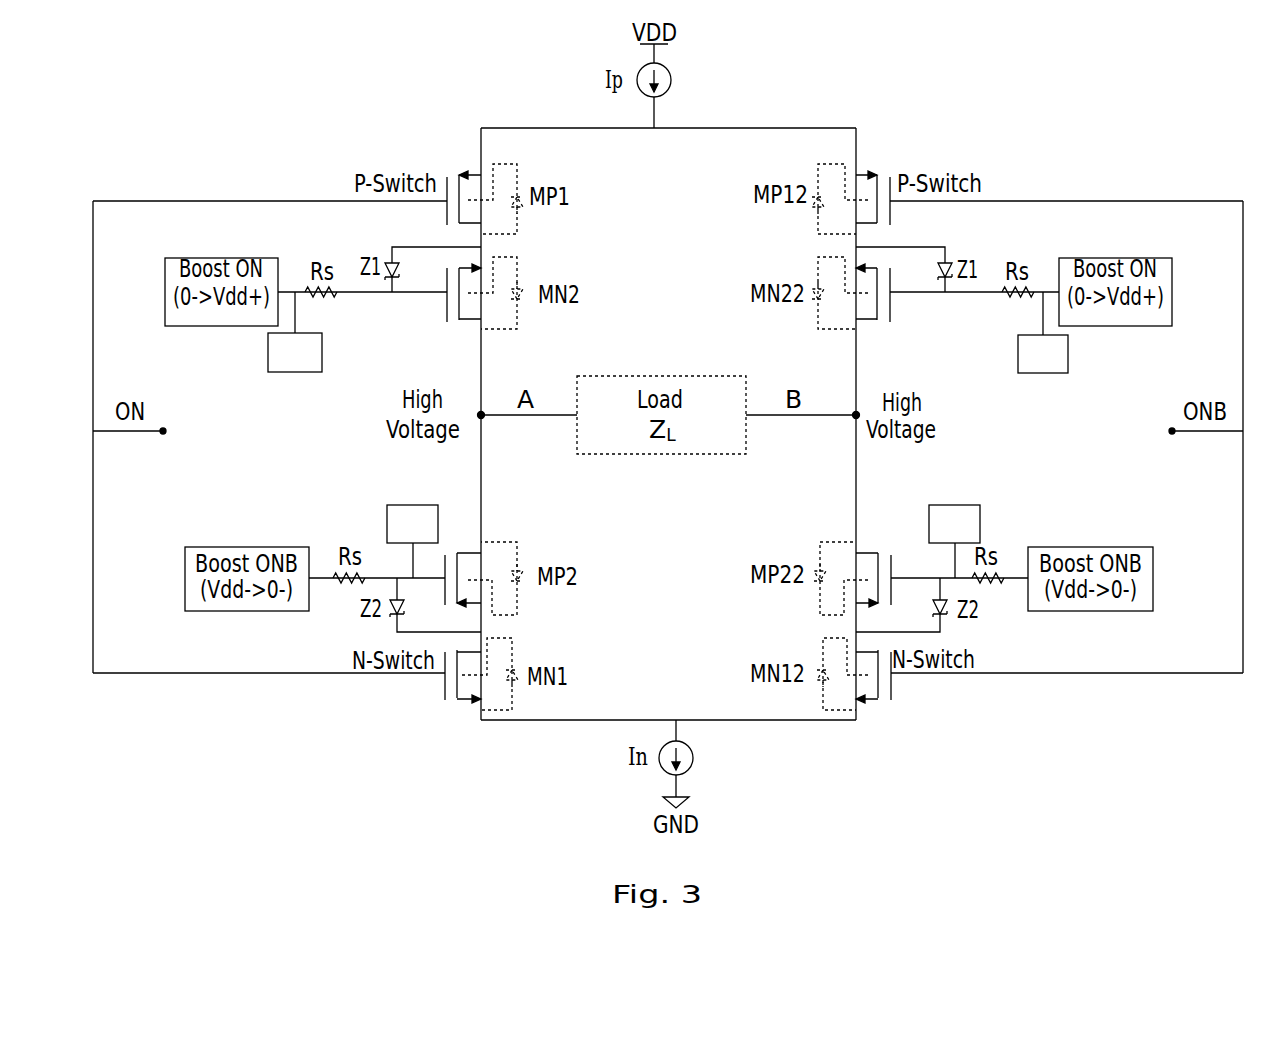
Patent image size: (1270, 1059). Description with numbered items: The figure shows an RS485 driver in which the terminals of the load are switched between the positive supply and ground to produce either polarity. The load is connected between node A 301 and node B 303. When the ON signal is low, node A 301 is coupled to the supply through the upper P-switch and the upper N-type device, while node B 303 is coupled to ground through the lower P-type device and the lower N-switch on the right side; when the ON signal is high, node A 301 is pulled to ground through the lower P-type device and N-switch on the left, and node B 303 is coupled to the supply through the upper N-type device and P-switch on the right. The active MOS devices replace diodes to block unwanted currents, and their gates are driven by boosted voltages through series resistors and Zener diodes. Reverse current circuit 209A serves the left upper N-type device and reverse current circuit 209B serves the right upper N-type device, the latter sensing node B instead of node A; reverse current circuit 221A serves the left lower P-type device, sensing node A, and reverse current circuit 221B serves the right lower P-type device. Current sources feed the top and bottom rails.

The reverse current circuit 209A is at (268, 351).
The reverse current circuit 209B is at (1068, 355).
The reverse current circuit 221A is at (387, 525).
The reverse current circuit 221B is at (980, 512).
The node A 301 is at (482, 417).
The node B 303 is at (855, 417).